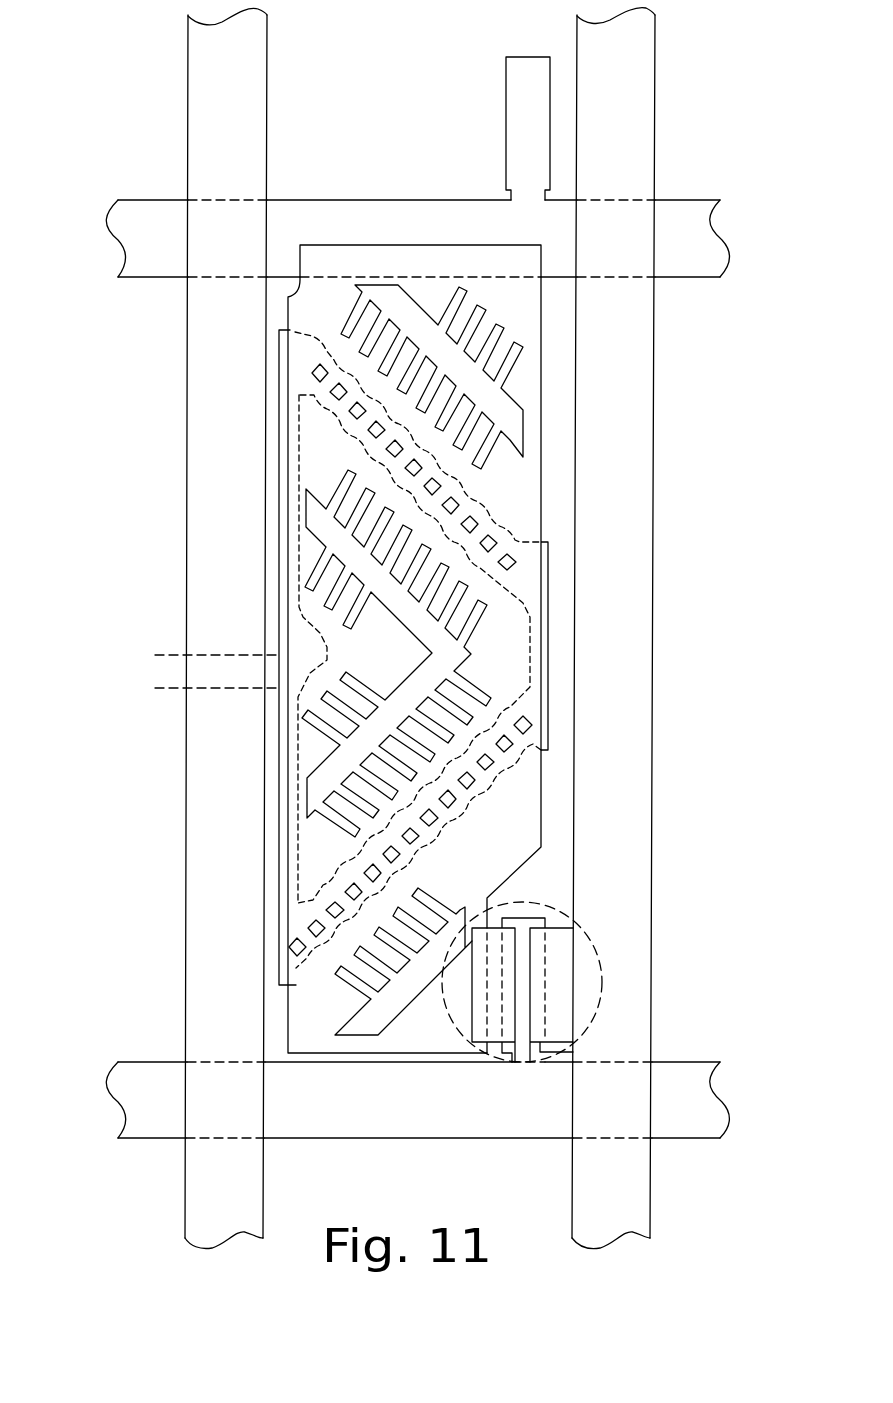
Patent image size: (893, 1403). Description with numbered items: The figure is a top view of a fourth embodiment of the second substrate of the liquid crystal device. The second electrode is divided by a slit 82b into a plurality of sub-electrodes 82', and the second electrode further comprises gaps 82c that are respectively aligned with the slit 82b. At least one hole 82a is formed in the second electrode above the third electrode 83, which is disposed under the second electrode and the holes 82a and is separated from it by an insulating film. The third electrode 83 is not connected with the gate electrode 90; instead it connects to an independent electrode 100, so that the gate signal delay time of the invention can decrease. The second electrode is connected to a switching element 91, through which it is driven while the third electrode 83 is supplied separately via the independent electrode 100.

The gate electrode 90 is at (520, 133).
The gaps 82c is at (491, 378).
The slit 82b is at (320, 522).
The sub-electrodes 82' is at (322, 635).
The hole 82a is at (310, 374).
The third electrode 83 is at (283, 562).
The switching element 91 is at (605, 975).
The independent electrode 100 is at (163, 673).